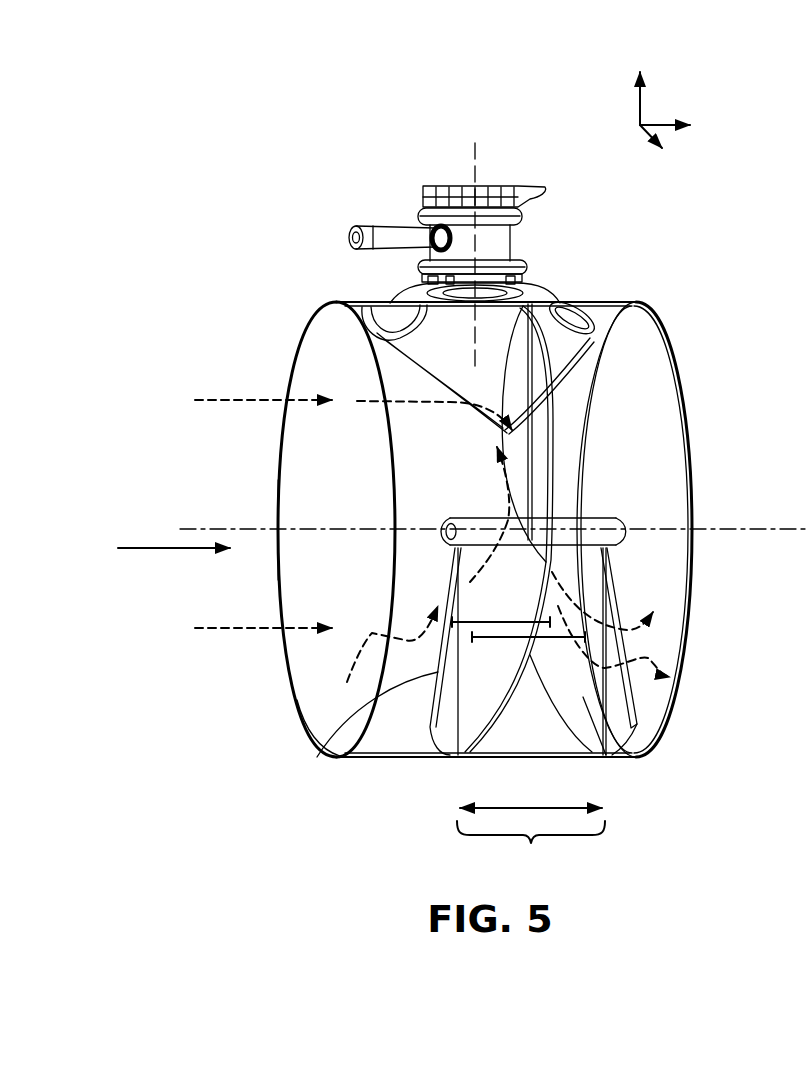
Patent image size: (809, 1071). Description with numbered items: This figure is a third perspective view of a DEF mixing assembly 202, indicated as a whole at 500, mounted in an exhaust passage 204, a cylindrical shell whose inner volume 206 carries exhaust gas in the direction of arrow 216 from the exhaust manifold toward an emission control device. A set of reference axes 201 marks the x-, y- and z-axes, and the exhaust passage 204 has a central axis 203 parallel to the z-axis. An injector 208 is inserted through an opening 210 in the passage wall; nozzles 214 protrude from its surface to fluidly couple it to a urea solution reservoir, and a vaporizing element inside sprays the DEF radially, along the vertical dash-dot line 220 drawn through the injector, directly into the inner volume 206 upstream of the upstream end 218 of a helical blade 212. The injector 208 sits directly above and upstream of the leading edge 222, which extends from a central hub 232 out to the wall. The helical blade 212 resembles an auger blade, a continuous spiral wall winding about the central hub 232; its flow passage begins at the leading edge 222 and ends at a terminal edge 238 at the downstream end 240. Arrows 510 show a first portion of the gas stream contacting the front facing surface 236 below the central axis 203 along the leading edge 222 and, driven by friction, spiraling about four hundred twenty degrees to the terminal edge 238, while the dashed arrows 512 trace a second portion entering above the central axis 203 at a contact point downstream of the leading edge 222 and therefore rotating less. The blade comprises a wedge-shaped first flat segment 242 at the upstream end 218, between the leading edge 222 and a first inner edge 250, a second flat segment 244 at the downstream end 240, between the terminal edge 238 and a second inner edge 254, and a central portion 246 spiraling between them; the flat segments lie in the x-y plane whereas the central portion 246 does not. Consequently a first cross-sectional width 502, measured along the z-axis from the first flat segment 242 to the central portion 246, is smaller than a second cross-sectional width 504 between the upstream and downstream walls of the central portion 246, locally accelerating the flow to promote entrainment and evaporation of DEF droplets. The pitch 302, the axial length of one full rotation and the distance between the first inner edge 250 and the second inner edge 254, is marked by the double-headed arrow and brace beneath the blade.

The flow system 500 is at (233, 130).
The reference axes 201 is at (667, 98).
The mixing assembly 202 is at (333, 200).
The central axis 203 is at (758, 520).
The exhaust passage 204 is at (321, 339).
The inner volume 206 is at (312, 503).
The injector 208 is at (491, 192).
The opening 210 is at (526, 292).
The helical blade 212 is at (432, 600).
The nozzles 214 is at (350, 238).
The arrow 216 is at (132, 548).
The upstream end 218 is at (425, 750).
The vertical axis 220 is at (470, 146).
The leading edge 222 is at (324, 737).
The central hub 232 is at (603, 513).
The front facing surface 236 is at (521, 586).
The terminal edge 238 is at (617, 599).
The downstream end 240 is at (714, 714).
The first flat segment 242 is at (447, 712).
The second flat segment 244 is at (623, 729).
The central portion 246 is at (531, 852).
The first inner edge 250 is at (460, 694).
The second inner edge 254 is at (604, 696).
The pitch 302 is at (511, 806).
The first cross-sectional width 502 is at (485, 618).
The second cross-sectional width 504 is at (522, 640).
The arrows 510 is at (262, 624).
The second flow path 512 is at (212, 397).